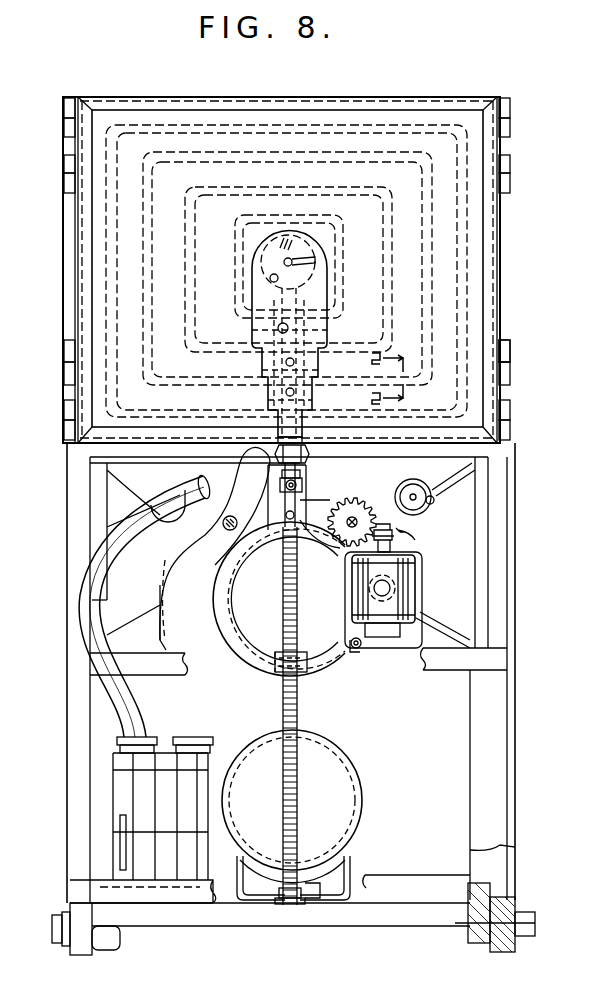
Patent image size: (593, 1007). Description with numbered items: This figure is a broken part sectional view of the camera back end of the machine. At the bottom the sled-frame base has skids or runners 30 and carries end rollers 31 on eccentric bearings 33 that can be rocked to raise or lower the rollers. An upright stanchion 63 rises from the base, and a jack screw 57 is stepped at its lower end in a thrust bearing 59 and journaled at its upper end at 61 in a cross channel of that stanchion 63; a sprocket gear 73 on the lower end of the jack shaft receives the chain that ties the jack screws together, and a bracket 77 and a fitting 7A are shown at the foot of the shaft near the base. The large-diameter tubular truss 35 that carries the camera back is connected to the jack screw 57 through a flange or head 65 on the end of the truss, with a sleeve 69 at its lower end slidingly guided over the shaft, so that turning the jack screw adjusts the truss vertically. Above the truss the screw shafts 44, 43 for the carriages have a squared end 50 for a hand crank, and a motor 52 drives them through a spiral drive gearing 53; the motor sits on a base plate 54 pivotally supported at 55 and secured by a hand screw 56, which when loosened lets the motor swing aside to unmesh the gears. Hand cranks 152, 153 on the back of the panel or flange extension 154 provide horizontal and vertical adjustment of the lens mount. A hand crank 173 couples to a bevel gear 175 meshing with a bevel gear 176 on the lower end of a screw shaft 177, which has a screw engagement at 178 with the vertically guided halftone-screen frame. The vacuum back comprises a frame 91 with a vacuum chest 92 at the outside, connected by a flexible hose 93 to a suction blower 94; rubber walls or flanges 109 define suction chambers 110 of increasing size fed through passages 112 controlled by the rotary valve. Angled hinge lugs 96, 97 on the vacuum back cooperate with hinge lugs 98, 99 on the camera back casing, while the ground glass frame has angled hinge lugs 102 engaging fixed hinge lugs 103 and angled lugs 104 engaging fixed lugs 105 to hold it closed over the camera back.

The frame 91 is at (138, 108).
The vacuum chest 92 is at (318, 240).
The flexible hose 93 is at (275, 432).
The suction blower 94 is at (140, 793).
The angled hinge lug 96 is at (65, 165).
The angled hinge lug 97 is at (511, 163).
The hinge lug 98 is at (66, 184).
The hinge lug 99 is at (511, 182).
The angled hinge lug 102 is at (511, 103).
The fixed hinge lug 103 is at (511, 124).
The angled lug 104 is at (62, 98).
The fixed lug 105 is at (65, 126).
The wall 109 is at (440, 236).
The suction chamber 110 is at (335, 283).
The passage 112 is at (278, 328).
The screw shaft 177 is at (300, 442).
The journal 61 is at (310, 455).
The bevel gear 176 is at (300, 474).
The bevel gear 175 is at (302, 487).
The hand crank 173 is at (296, 508).
The jack screw 57 is at (298, 718).
The squared end 50 is at (352, 520).
The spiral drive gearing 53 is at (340, 538).
The screw shaft 44 is at (382, 520).
The hand crank 153 is at (434, 503).
The panel extension 154 is at (458, 538).
The motor 52 is at (416, 604).
The pivot 55 is at (392, 586).
The base plate 54 is at (350, 592).
The hand screw 56 is at (358, 652).
The tubular truss 35 is at (230, 578).
The flange 65 is at (258, 670).
The sleeve 69 is at (276, 665).
The screw engagement 178 is at (272, 462).
The screw shaft 43 is at (240, 522).
The hand crank 152 is at (165, 488).
The stanchion 63 is at (515, 756).
The runner 30 is at (86, 955).
The roller 31 is at (120, 940).
The eccentric bearing 33 is at (58, 946).
The hook bracket 77 is at (345, 862).
The sprocket gear 73 is at (285, 898).
The thrust bearing 59 is at (300, 904).
The bracket 7A is at (320, 898).